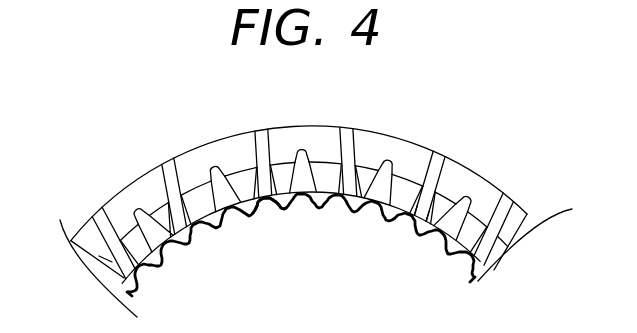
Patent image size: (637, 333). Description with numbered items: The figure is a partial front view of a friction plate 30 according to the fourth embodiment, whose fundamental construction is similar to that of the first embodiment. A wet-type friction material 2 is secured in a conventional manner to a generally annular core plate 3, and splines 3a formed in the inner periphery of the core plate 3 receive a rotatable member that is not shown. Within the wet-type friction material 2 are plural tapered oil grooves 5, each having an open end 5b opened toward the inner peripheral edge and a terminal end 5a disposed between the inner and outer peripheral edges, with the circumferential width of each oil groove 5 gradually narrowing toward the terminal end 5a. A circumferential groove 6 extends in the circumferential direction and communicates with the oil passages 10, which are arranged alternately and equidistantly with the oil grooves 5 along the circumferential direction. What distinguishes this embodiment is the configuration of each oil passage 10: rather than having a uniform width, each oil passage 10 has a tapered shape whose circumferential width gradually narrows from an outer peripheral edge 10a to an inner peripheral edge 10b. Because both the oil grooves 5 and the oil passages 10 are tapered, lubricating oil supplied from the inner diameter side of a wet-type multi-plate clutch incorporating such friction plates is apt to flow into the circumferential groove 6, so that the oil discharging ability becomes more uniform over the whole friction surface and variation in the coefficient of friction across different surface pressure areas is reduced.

The friction plate 30 is at (490, 140).
The wet-type friction material 2 is at (193, 167).
The core plate 3 is at (343, 199).
The splines 3a is at (278, 207).
The oil grooves 5 is at (97, 217).
The terminal end 5a is at (139, 232).
The open end 5b is at (167, 247).
The circumferential groove 6 is at (498, 207).
The oil passage 10 is at (424, 178).
The outer peripheral edge 10a is at (412, 218).
The inner peripheral edge 10b is at (437, 176).